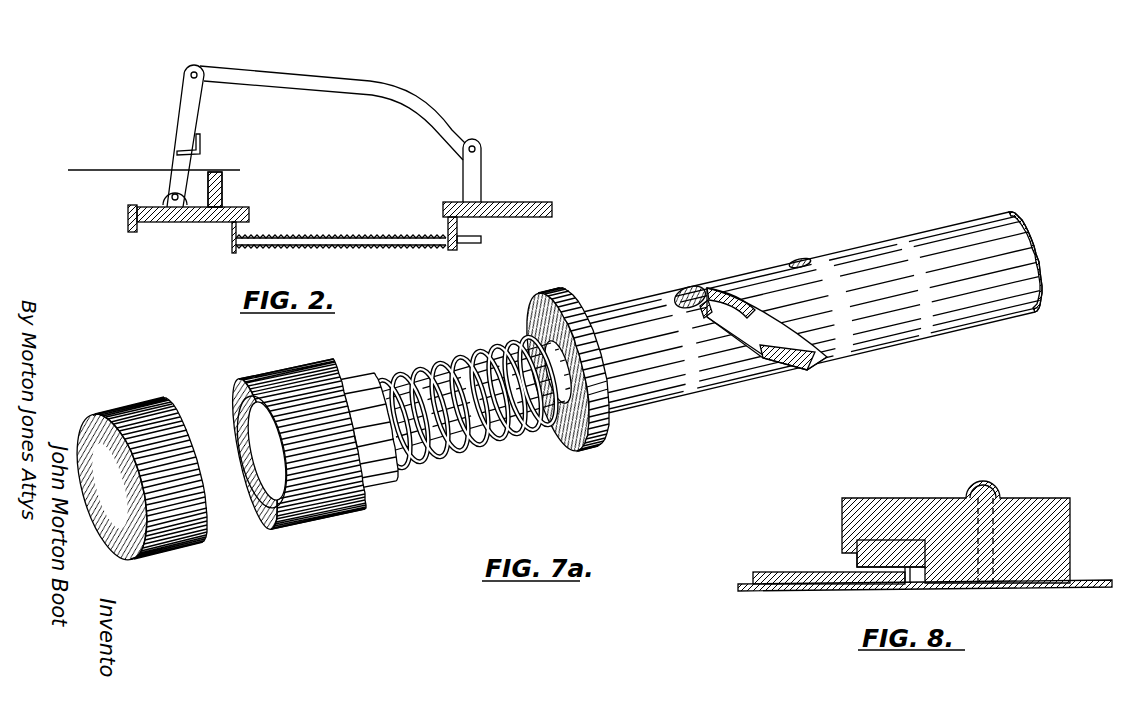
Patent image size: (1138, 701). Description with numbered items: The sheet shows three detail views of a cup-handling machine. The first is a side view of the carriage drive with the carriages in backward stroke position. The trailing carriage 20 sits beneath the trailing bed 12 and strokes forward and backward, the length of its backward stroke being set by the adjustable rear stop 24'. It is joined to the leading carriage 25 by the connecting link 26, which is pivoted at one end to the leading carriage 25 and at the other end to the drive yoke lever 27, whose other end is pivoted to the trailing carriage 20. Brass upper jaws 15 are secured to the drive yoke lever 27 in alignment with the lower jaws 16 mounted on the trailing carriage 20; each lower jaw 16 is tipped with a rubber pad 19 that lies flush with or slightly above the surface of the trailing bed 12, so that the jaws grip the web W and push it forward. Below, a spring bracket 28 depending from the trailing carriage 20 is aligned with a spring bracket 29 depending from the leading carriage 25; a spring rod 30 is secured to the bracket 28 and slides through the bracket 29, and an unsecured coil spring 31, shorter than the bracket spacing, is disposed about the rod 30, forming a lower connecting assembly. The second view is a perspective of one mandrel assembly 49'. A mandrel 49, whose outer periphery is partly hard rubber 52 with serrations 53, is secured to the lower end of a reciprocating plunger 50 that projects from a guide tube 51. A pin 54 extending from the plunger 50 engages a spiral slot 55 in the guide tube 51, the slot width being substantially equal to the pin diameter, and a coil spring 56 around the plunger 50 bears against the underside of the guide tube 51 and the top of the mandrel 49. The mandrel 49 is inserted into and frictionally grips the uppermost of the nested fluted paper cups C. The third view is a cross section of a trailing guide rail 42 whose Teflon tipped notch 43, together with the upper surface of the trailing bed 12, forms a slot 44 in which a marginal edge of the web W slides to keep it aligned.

In FIG. 8, the trailing bed 12 is at (1086, 582).
In FIG. 2, the upper jaws 15 is at (200, 146).
In FIG. 2, the lower jaws 16 is at (222, 189).
In FIG. 2, the rubber pad 19 is at (215, 172).
In FIG. 2, the trailing carriage 20 is at (162, 222).
In FIG. 2, the rear stop 24' is at (111, 231).
In FIG. 2, the leading carriage 25 is at (527, 217).
In FIG. 2, the connecting link 26 is at (419, 99).
In FIG. 2, the drive yoke lever 27 is at (185, 101).
In FIG. 2, the spring brackets 28 is at (233, 252).
In FIG. 2, the spring brackets 29 is at (459, 230).
In FIG. 2, the spring rods 30 is at (446, 250).
In FIG. 2, the coil springs 31 is at (397, 247).
In FIG. 8, the trailing guide rails 42 is at (889, 504).
In FIG. 8, the notch 43 is at (910, 582).
In FIG. 8, the slot 44 is at (850, 565).
In FIG. 7a, the mandrel 49 is at (368, 456).
In FIG. 7a, the mandrel assembly 49' is at (846, 429).
In FIG. 7a, the plunger 50 is at (1038, 256).
In FIG. 7a, the guide tube 51 is at (912, 325).
In FIG. 7a, the hard rubber 52 is at (330, 510).
In FIG. 7a, the serrations 53 is at (271, 372).
In FIG. 7a, the pin 54 is at (694, 288).
In FIG. 7a, the spiral slot 55 is at (742, 298).
In FIG. 7a, the coil spring 56 is at (440, 362).
In FIG. 7a, the fluted paper cups C is at (186, 542).
In FIG. 2, the web W is at (154, 163).
In FIG. 8, the web W is at (783, 572).